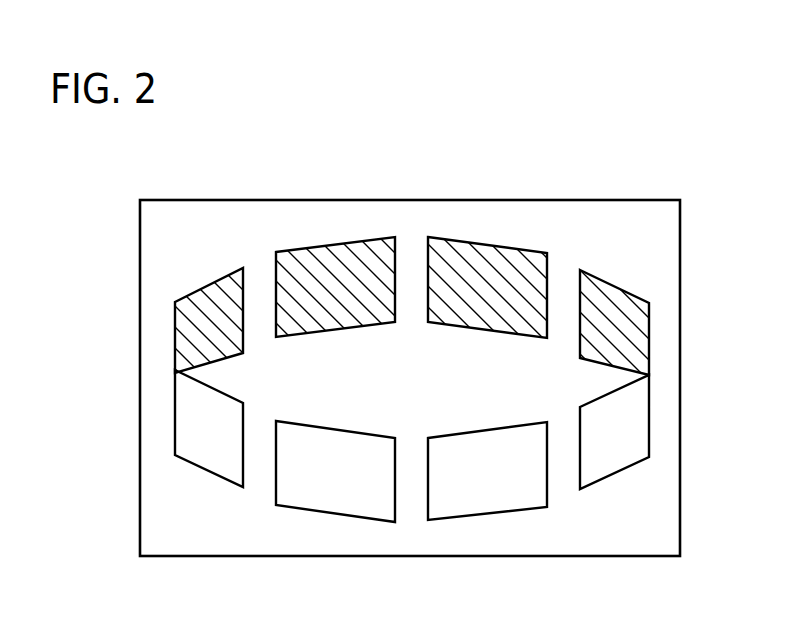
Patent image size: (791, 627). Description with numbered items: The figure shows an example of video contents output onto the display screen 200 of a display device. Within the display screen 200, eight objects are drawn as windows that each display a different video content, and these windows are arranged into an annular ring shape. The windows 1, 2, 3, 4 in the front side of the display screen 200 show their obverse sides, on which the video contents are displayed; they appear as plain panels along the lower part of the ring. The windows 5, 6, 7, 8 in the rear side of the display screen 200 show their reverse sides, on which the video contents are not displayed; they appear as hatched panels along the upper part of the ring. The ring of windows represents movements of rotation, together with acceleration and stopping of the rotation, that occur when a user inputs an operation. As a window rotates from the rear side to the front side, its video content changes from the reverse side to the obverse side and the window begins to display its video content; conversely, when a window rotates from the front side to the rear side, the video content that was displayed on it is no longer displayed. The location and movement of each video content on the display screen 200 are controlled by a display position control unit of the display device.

The display screen 200 is at (458, 200).
The window 1 is at (209, 428).
The window 2 is at (335, 471).
The window 3 is at (487, 471).
The window 4 is at (614, 432).
The window 5 is at (614, 322).
The window 6 is at (487, 287).
The window 7 is at (335, 287).
The window 8 is at (209, 320).